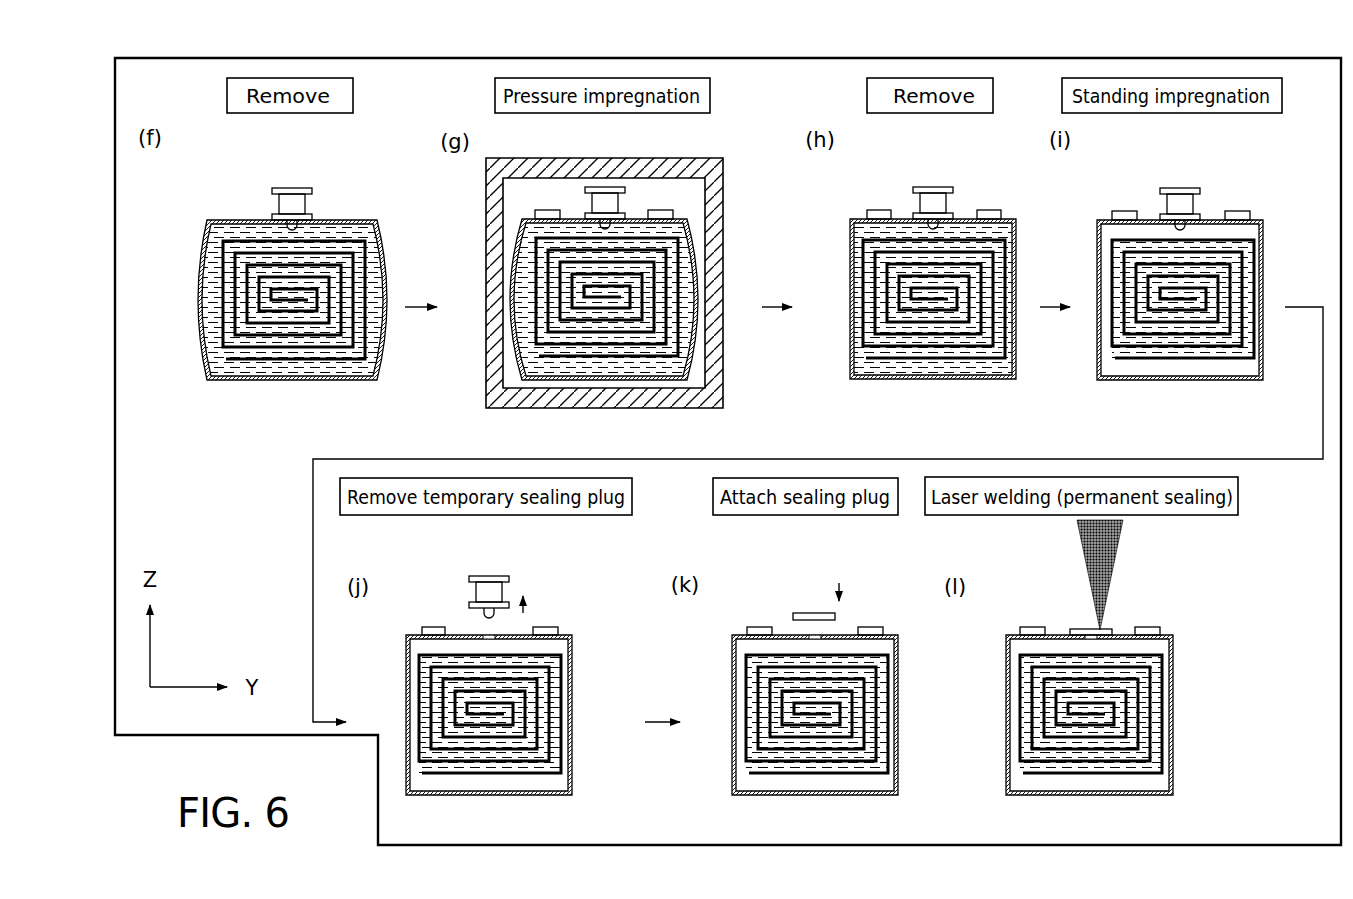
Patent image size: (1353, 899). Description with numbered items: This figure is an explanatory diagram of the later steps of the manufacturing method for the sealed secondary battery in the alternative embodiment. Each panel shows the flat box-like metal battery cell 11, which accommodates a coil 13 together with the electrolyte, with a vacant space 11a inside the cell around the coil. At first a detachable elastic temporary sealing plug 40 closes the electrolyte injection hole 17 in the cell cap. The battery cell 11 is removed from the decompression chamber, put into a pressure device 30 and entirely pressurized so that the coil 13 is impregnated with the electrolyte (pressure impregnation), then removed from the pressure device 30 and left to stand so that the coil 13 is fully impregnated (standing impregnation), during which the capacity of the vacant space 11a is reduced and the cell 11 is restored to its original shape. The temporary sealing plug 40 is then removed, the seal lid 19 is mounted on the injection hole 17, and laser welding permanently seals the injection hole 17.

The battery cell 11 is at (199, 330).
The vacant space 11a is at (378, 369).
The coil 13 is at (228, 368).
The electrolyte injection hole 17 is at (492, 633).
The seal lid 19 is at (812, 612).
The pressure device 30 is at (718, 397).
The temporary sealing plug 40 is at (291, 198).